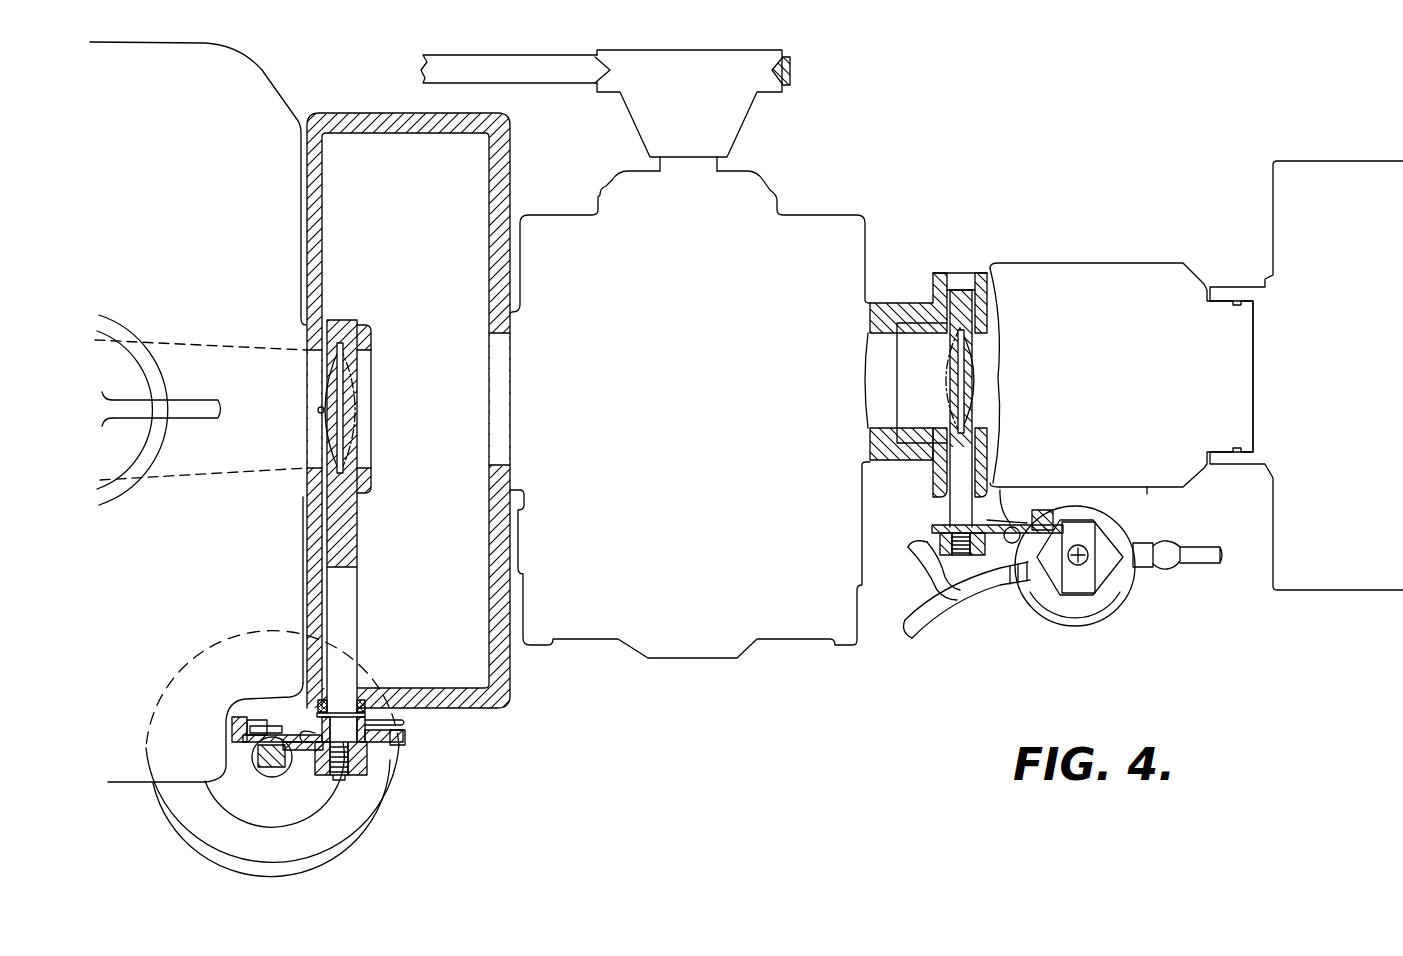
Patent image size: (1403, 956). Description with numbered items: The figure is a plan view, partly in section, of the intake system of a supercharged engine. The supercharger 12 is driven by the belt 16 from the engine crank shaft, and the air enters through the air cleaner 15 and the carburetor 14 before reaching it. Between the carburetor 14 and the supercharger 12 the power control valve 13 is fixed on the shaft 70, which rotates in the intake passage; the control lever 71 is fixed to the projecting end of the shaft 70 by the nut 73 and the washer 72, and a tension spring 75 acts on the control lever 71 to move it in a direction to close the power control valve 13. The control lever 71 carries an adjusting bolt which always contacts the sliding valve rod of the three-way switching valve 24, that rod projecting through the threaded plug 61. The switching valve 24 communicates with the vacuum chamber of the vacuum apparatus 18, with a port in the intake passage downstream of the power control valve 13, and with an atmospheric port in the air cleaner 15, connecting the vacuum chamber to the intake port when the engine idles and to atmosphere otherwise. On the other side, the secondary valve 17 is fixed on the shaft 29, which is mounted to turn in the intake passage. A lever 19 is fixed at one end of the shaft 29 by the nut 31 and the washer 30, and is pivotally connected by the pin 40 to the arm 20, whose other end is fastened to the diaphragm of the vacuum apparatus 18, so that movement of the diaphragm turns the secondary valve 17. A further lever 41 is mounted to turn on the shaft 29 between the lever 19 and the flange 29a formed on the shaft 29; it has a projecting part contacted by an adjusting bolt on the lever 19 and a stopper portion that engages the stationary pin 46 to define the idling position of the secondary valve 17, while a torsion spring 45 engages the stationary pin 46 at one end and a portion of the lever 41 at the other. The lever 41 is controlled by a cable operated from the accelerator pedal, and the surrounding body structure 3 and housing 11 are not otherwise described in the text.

The body 3 is at (283, 91).
The frame 11 is at (513, 695).
The supercharger 12 is at (680, 658).
The power control valve 13 is at (930, 372).
The carburetor 14 is at (1080, 263).
The air cleaner 15 is at (1348, 163).
The belt 16 is at (500, 57).
The secondary valve 17 is at (320, 443).
The vacuum apparatus 18 is at (368, 843).
The lever 19 is at (302, 767).
The arm 20 is at (260, 755).
The three-way switching valve 24 is at (1053, 621).
The shaft 29 is at (347, 618).
The flange 29a is at (383, 712).
The washer 30 is at (368, 752).
The nut 31 is at (367, 775).
The pin 40 is at (272, 768).
The lever 41 is at (232, 722).
The torsion spring 45 is at (405, 721).
The stationary pin 46 is at (405, 734).
The threaded plug 61 is at (1105, 578).
The shaft 70 is at (955, 295).
The control lever 71 is at (932, 527).
The washer 72 is at (940, 540).
The nut 73 is at (925, 555).
The tension spring 75 is at (1003, 497).